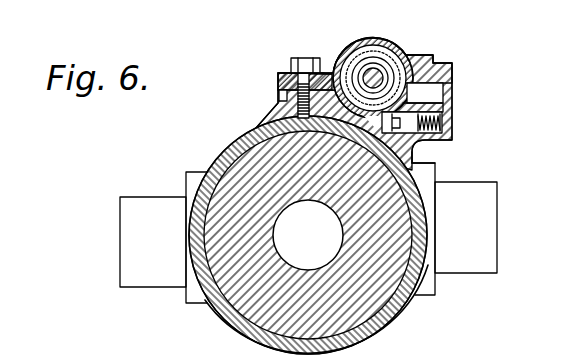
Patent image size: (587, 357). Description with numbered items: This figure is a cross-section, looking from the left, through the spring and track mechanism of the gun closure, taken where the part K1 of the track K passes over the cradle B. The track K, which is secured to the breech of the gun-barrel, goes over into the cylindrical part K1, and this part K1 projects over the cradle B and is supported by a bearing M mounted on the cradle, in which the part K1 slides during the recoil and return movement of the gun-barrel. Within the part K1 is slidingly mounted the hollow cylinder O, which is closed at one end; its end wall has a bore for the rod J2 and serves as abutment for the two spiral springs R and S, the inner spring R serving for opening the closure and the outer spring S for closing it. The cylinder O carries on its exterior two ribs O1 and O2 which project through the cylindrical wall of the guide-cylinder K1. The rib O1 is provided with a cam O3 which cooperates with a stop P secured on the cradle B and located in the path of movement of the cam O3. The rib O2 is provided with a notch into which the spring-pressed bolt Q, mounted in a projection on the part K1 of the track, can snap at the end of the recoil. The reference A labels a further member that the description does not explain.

The left trunnion shaft A is at (208, 308).
The cradle B is at (410, 308).
The track K is at (427, 108).
The part of the track K1 is at (417, 60).
The rod J2 is at (425, 66).
The bearing M is at (406, 58).
The hollow cylinder O is at (380, 78).
The rib O1 is at (338, 70).
The rib O2 is at (421, 158).
The cam O3 is at (327, 73).
The stop P is at (278, 88).
The spring-pressed bolt Q is at (412, 155).
The inner spring R is at (381, 50).
The outer spring S is at (352, 56).